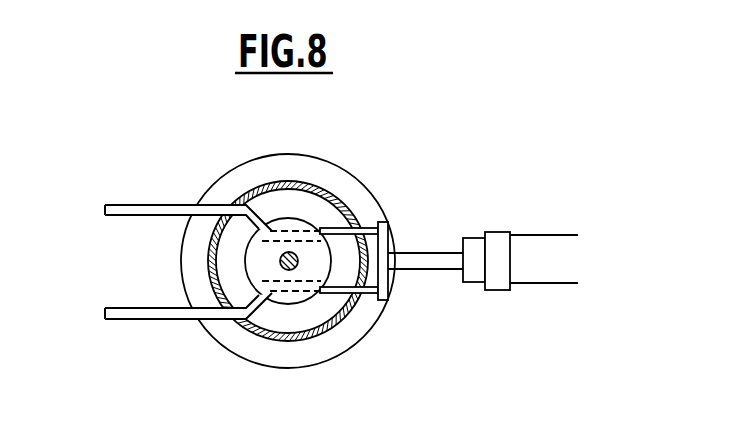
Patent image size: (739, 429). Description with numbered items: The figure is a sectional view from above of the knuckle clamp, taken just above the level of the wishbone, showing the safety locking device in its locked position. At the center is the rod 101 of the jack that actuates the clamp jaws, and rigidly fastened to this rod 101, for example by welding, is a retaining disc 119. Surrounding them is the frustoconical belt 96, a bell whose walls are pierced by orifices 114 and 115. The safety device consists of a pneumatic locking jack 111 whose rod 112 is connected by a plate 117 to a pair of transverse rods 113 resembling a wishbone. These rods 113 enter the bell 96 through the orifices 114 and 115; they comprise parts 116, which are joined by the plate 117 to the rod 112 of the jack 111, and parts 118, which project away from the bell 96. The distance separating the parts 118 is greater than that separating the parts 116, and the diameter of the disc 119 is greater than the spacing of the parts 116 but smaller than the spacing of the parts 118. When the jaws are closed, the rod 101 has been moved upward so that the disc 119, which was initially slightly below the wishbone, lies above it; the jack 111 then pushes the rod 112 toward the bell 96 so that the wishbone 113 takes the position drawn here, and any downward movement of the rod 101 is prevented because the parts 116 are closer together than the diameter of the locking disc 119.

The frustoconical belt 96 is at (253, 168).
The rod 101 is at (290, 252).
The pneumatic locking jack 111 is at (537, 252).
The rod 112 is at (425, 262).
The transverse rods 113 is at (111, 218).
The orifice 114 is at (364, 227).
The orifice 115 is at (218, 198).
The parts 116 is at (333, 230).
The plate 117 is at (387, 222).
The parts 118 is at (140, 204).
The retaining disc 119 is at (290, 297).